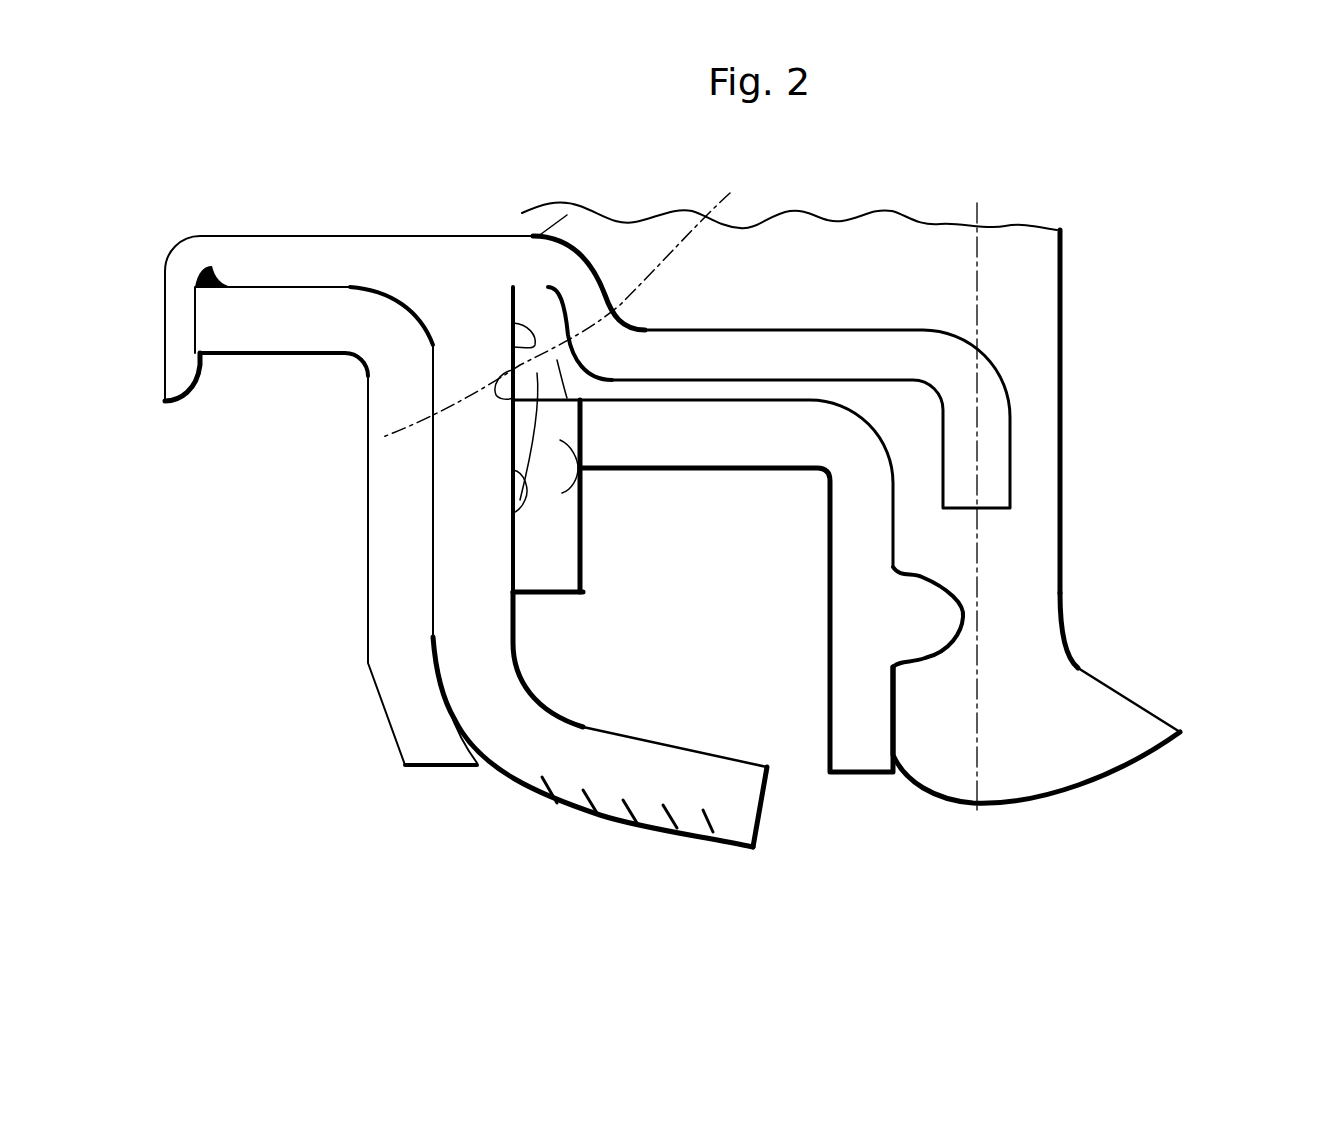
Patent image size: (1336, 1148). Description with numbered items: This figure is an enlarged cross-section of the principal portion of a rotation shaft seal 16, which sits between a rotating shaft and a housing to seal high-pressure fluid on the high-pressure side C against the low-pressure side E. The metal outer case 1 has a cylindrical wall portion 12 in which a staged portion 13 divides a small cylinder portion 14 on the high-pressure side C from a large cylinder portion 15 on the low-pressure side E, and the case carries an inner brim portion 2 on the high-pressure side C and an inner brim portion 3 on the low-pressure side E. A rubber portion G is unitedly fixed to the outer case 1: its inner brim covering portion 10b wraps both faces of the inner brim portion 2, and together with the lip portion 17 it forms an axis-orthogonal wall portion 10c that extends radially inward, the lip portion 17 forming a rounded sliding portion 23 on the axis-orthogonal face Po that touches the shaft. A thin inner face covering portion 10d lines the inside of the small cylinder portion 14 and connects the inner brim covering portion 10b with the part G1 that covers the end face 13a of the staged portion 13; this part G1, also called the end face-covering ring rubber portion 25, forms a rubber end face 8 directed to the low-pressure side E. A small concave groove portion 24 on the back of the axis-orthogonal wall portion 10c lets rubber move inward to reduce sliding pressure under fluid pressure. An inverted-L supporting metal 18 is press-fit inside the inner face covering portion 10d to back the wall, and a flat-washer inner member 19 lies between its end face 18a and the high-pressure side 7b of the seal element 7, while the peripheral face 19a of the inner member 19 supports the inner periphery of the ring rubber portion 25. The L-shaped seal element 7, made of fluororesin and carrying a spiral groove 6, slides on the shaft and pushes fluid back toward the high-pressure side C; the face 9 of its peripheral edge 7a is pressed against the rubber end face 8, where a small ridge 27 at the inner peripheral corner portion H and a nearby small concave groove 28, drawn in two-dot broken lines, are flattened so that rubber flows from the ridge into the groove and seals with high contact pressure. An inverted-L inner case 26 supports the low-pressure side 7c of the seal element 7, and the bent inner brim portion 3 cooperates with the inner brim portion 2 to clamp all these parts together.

The outer case 1 is at (762, 326).
The inner brim portion 2 is at (993, 452).
The inner brim portion 3 is at (165, 322).
The spiral groove 6 is at (690, 828).
The seal element 7 is at (533, 768).
The peripheral edge 7a is at (457, 365).
The high-pressure side 7b is at (433, 560).
The low-pressure side 7c is at (430, 580).
The rubber end face 8 is at (545, 300).
The face 9 is at (533, 340).
The inner brim covering portion 10b is at (913, 478).
The axis-orthogonal wall portion 10c is at (1062, 600).
The inner face covering portion 10d is at (737, 387).
The cylindrical wall portion 12 is at (452, 228).
The staged portion 13 is at (585, 280).
The end face 13a is at (600, 332).
The small cylinder portion 14 is at (960, 316).
The large cylinder portion 15 is at (555, 227).
The rotation shaft seal 16 is at (966, 183).
The lip portion 17 is at (1040, 765).
The supporting metal 18 is at (832, 686).
The end face 18a is at (587, 492).
The inner member 19 is at (550, 573).
The peripheral face 19a is at (525, 445).
The sliding portion 23 is at (1093, 810).
The small concave groove portion 24 is at (913, 617).
The end face-covering ring rubber portion 25 is at (513, 415).
The inner case 26 is at (387, 653).
The small ridge 27 is at (375, 440).
The small concave groove 28 is at (566, 303).
The high-pressure side C is at (1133, 385).
The low-pressure side E is at (332, 478).
The rubber portion G is at (1027, 562).
The part G1 is at (580, 405).
The inner peripheral corner portion H is at (505, 395).
The axis-orthogonal face Po is at (978, 690).